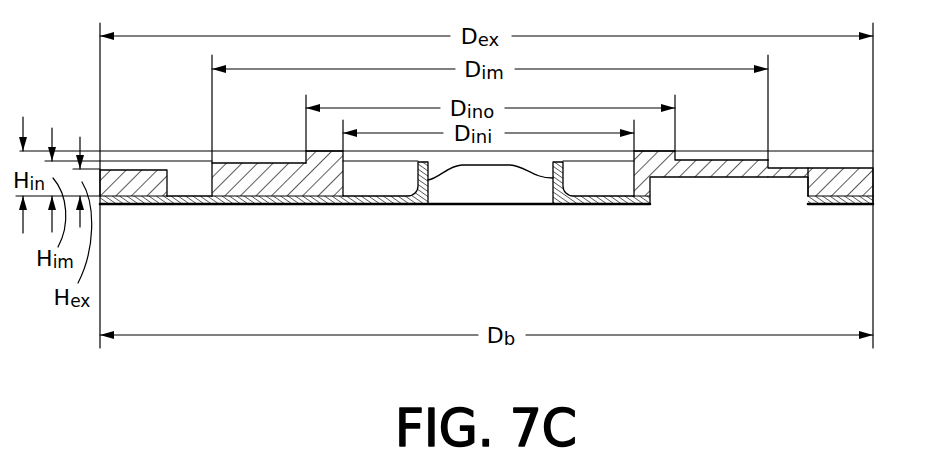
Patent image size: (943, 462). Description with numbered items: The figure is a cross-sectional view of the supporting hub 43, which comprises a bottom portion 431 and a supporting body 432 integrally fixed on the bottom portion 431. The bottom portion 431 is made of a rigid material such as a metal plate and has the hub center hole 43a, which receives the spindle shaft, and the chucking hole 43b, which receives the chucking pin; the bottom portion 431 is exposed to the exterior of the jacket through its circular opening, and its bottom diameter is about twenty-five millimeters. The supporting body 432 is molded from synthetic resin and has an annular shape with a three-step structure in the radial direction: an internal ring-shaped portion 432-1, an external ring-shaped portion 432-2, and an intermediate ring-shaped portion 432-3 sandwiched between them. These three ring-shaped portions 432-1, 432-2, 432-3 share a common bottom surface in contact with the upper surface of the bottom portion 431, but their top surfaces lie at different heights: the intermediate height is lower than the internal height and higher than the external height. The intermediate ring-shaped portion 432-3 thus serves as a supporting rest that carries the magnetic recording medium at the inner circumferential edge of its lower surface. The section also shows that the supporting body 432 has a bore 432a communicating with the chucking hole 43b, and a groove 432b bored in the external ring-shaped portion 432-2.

The supporting hub 43 is at (486, 205).
The hub center hole 43a is at (465, 183).
The chucking hole 43b is at (662, 188).
The bottom portion 431 is at (377, 200).
The supporting body 432 is at (845, 198).
The bore 432a is at (782, 183).
The groove 432b is at (185, 178).
The internal ring-shaped portion 432-1 is at (325, 182).
The external ring-shaped portion 432-2 is at (133, 183).
The intermediate ring-shaped portion 432-3 is at (248, 180).